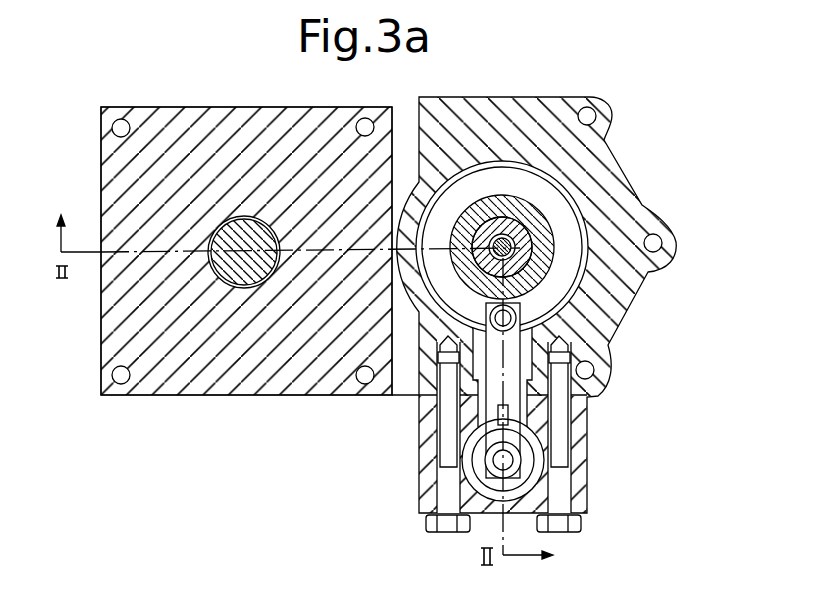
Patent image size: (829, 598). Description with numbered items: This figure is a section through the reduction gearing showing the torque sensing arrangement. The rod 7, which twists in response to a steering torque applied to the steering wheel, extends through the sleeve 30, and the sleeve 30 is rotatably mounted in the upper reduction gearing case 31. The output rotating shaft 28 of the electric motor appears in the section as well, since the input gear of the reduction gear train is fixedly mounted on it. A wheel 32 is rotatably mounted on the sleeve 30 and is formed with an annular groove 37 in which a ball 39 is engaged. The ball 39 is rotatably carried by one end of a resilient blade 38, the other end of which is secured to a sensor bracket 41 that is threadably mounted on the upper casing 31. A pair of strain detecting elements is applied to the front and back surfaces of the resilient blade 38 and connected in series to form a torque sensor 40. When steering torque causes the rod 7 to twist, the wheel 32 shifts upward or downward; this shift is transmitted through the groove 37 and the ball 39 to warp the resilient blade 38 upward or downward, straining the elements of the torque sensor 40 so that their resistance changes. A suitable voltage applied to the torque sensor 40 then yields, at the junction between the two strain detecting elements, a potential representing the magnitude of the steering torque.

The rod 7 is at (510, 252).
The output rotating shaft 28 is at (245, 268).
The sleeve 30 is at (523, 232).
The upper reduction gearing case 31 is at (610, 148).
The wheel 32 is at (587, 232).
The annular groove 37 is at (555, 285).
The resilient blade 38 is at (510, 437).
The ball 39 is at (518, 313).
The torque sensor 40 is at (510, 418).
The sensor bracket 41 is at (585, 494).